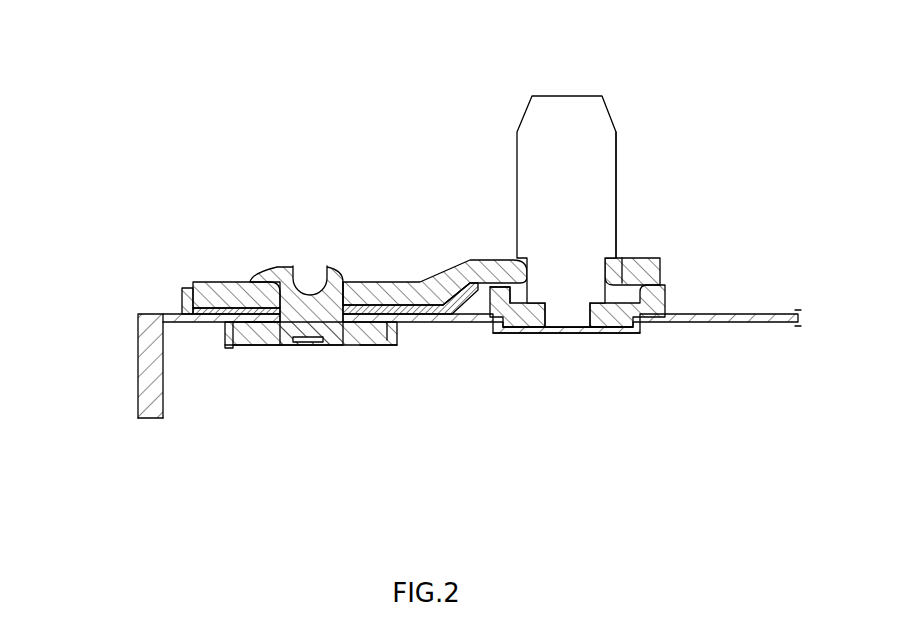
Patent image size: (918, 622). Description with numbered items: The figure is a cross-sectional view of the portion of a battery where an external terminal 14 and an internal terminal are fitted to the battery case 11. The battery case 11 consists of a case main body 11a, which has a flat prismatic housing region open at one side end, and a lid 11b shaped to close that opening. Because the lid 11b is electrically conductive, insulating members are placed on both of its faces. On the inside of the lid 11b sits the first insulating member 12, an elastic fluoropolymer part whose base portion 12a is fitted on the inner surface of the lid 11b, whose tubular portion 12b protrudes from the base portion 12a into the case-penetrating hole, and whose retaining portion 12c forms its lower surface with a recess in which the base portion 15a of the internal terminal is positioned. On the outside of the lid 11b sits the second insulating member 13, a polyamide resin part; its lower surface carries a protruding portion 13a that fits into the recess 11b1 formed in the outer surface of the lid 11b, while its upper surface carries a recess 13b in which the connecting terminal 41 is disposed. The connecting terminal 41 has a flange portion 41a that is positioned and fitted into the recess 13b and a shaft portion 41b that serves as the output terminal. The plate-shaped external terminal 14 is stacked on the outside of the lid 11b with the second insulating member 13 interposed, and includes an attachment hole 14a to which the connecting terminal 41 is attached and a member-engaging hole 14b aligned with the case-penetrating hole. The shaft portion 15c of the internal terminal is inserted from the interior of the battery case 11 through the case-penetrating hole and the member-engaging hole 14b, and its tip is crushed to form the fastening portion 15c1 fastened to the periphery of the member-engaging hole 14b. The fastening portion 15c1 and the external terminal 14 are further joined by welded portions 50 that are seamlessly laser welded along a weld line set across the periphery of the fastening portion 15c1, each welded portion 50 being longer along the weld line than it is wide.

The battery case 11 is at (423, 324).
The case main body 11a is at (138, 396).
The lid 11b is at (774, 313).
The recess 11b1 is at (603, 334).
The first insulating member 12 is at (408, 350).
The base portion 12a is at (410, 343).
The tubular portion 12b is at (258, 347).
The retaining portion 12c is at (373, 347).
The second insulating member 13 is at (670, 283).
The protruding portion 13a is at (520, 340).
The recess 13b is at (523, 296).
The external terminal 14 is at (458, 257).
The attachment hole 14a is at (616, 272).
The member-engaging hole 14b is at (343, 290).
The base portion 15a is at (242, 347).
The shaft portion 15c is at (288, 347).
The fastening portion 15c1 is at (296, 266).
The connecting terminal 41 is at (590, 88).
The flange portion 41a is at (656, 316).
The shaft portion 41b is at (616, 175).
The welded portion 50 is at (246, 268).